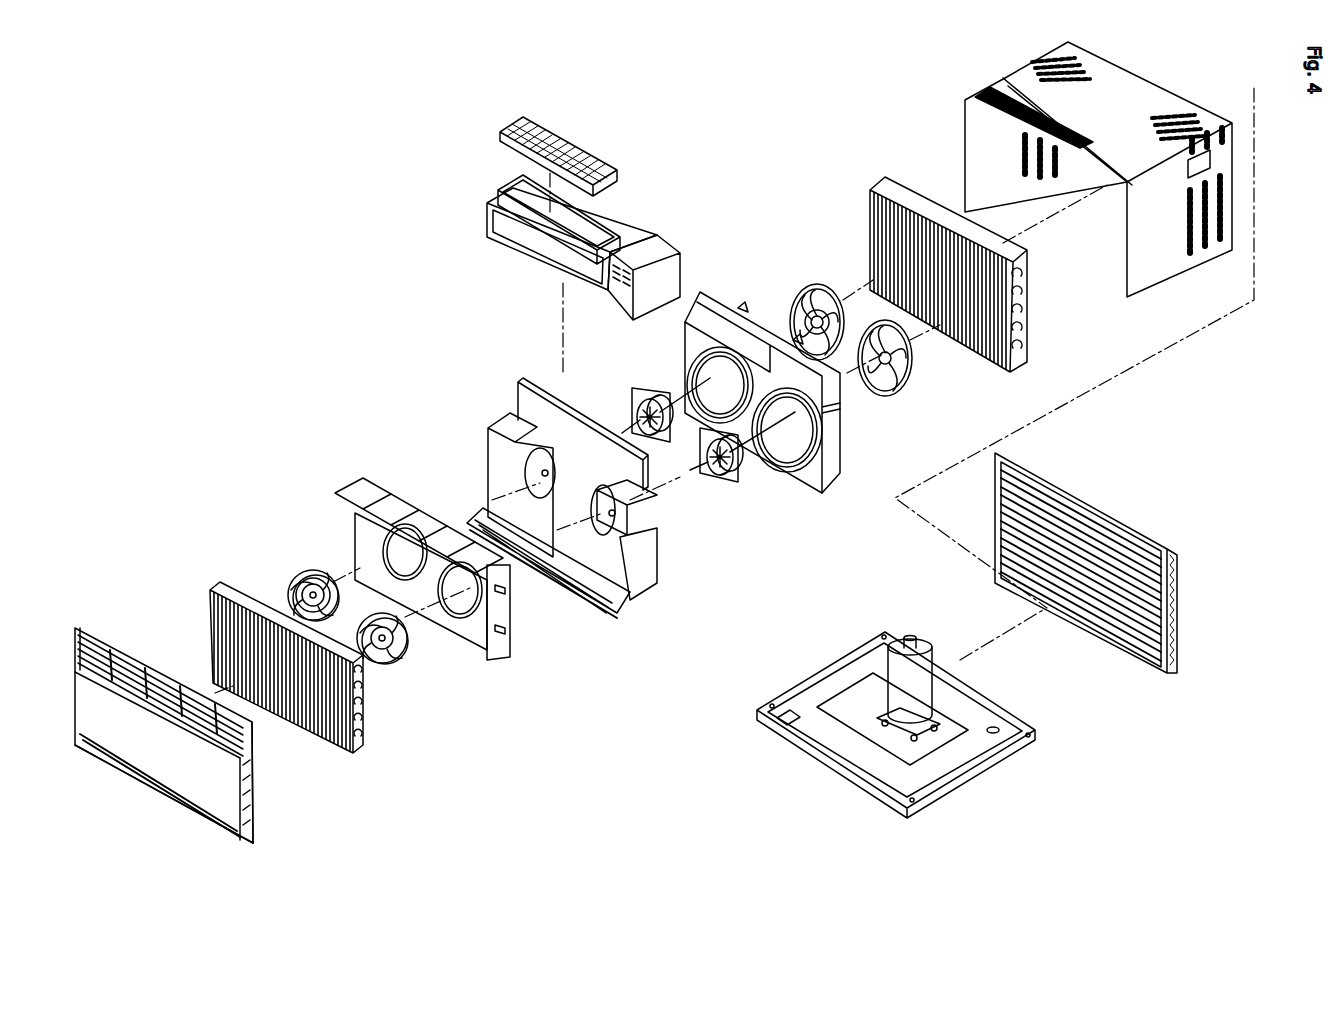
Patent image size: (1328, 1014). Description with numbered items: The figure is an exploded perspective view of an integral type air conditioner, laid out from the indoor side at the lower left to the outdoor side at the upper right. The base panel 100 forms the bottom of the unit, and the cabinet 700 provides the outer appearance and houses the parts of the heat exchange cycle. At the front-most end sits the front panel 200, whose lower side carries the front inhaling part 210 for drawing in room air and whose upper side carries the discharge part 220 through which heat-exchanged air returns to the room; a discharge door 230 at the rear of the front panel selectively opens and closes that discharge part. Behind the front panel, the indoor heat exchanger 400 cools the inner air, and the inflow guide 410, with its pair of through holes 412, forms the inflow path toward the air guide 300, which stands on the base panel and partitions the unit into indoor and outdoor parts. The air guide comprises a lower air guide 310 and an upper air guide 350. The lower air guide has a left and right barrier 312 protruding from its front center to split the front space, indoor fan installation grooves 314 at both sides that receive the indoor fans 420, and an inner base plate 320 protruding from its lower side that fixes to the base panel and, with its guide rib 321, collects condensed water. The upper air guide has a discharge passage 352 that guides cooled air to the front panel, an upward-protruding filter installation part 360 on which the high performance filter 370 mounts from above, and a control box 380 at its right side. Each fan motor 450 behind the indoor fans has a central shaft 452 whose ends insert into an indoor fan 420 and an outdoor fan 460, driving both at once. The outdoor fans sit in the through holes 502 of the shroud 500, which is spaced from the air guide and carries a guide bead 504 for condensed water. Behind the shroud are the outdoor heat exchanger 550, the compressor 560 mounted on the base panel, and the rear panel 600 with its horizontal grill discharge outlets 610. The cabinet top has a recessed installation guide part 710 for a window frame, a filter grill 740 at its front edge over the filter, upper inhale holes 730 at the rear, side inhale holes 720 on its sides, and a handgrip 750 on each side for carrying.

The base panel 100 is at (940, 725).
The front panel 200 is at (207, 701).
The front inhaling part 210 is at (138, 773).
The discharge part 220 is at (84, 633).
The discharge door 230 is at (245, 762).
The air guide 300 is at (549, 210).
The lower air guide 310 is at (529, 510).
The left and right barrier 312 is at (578, 445).
The indoor fan installation grooves 314 is at (530, 455).
The inner base plate 320 is at (480, 513).
The guide rib 321 is at (563, 590).
The upper air guide 350 is at (521, 237).
The discharge passage 352 is at (490, 218).
The filter installation part 360 is at (513, 190).
The high performance filter 370 is at (497, 133).
The control box 380 is at (667, 270).
The indoor heat exchanger 400 is at (220, 587).
The inflow guide 410 is at (422, 568).
The through holes 412 is at (466, 600).
The indoor fan 420 is at (311, 569).
The fan motor 450 is at (714, 471).
The central shaft 452 is at (757, 460).
The outdoor fan 460 is at (830, 289).
The shroud 500 is at (820, 325).
The through hole 502 is at (800, 443).
The guide bead 504 is at (712, 293).
The outdoor heat exchanger 550 is at (1027, 320).
The compressor 560 is at (930, 673).
The rear panel 600 is at (1139, 563).
The grill discharge outlets 610 is at (1140, 540).
The cabinet 700 is at (1049, 162).
The installation guide part 710 is at (1005, 75).
The side inhale holes 720 is at (1207, 250).
The upper inhale holes 730 is at (1067, 55).
The filter grill 740 is at (973, 98).
The handgrip 750 is at (1207, 153).